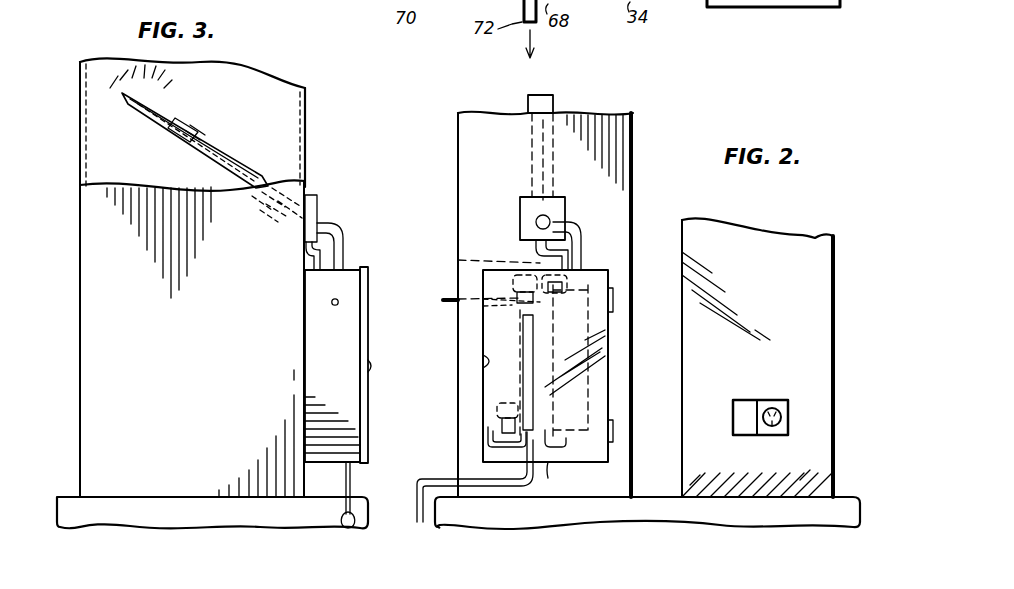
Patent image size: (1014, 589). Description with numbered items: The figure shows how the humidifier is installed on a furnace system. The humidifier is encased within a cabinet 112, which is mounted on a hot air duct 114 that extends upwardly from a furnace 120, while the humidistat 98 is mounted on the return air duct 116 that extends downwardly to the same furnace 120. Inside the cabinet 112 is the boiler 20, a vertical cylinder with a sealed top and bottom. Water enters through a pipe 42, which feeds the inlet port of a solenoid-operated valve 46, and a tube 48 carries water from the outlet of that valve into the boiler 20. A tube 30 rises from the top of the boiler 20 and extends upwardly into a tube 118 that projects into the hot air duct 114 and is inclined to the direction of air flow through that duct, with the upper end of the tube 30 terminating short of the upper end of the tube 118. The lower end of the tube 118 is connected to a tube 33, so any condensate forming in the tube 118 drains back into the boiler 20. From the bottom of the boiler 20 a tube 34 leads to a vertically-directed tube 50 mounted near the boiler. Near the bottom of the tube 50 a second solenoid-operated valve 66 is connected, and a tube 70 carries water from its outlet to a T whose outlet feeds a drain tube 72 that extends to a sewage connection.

In FIG. 2, the boiler 20 is at (595, 392).
In FIG. 3, the tube 30 is at (203, 127).
In FIG. 2, the tube 30 is at (530, 143).
In FIG. 3, the tube 33 is at (303, 253).
In FIG. 2, the tube 33 is at (535, 248).
In FIG. 2, the tube 34 is at (548, 470).
In FIG. 3, the pipe 42 is at (331, 305).
In FIG. 2, the pipe 42 is at (445, 295).
In FIG. 2, the solenoid-operated valve 46 is at (520, 313).
In FIG. 2, the tube 48 is at (458, 260).
In FIG. 2, the vertically-directed tube 50 is at (520, 332).
In FIG. 2, the solenoid-operated valve 66 is at (495, 412).
In FIG. 2, the tube 70 is at (488, 442).
In FIG. 3, the drain tube 72 is at (346, 528).
In FIG. 2, the drain tube 72 is at (432, 474).
In FIG. 2, the humidistat 98 is at (762, 400).
In FIG. 3, the cabinet 112 is at (369, 399).
In FIG. 2, the cabinet 112 is at (600, 338).
In FIG. 3, the hot air duct 114 is at (292, 101).
In FIG. 2, the hot air duct 114 is at (458, 150).
In FIG. 2, the return air duct 116 is at (814, 237).
In FIG. 3, the tube 118 is at (143, 108).
In FIG. 2, the tube 118 is at (557, 104).
In FIG. 3, the furnace 120 is at (57, 498).
In FIG. 2, the furnace 120 is at (852, 497).